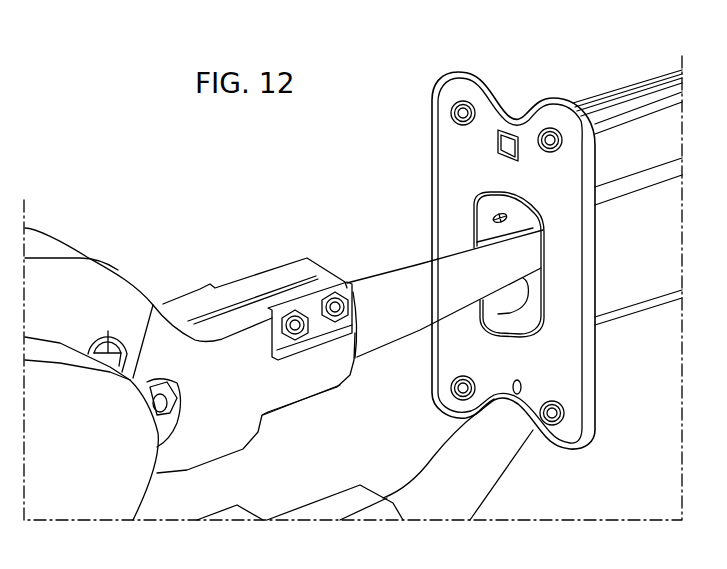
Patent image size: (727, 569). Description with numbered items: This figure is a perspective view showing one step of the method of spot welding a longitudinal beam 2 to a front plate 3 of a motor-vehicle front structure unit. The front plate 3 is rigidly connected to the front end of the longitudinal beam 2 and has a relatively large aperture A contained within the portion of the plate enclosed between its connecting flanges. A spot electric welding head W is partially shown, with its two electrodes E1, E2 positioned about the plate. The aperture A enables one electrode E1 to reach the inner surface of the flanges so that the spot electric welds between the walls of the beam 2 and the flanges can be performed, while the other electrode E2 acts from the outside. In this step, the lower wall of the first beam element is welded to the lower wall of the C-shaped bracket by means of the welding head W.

The longitudinal beam 2 is at (613, 86).
The front plate 3 is at (488, 76).
The spot electric welding head W is at (111, 258).
The electrode E1 is at (393, 283).
The electrode E2 is at (490, 482).
The aperture A is at (533, 307).